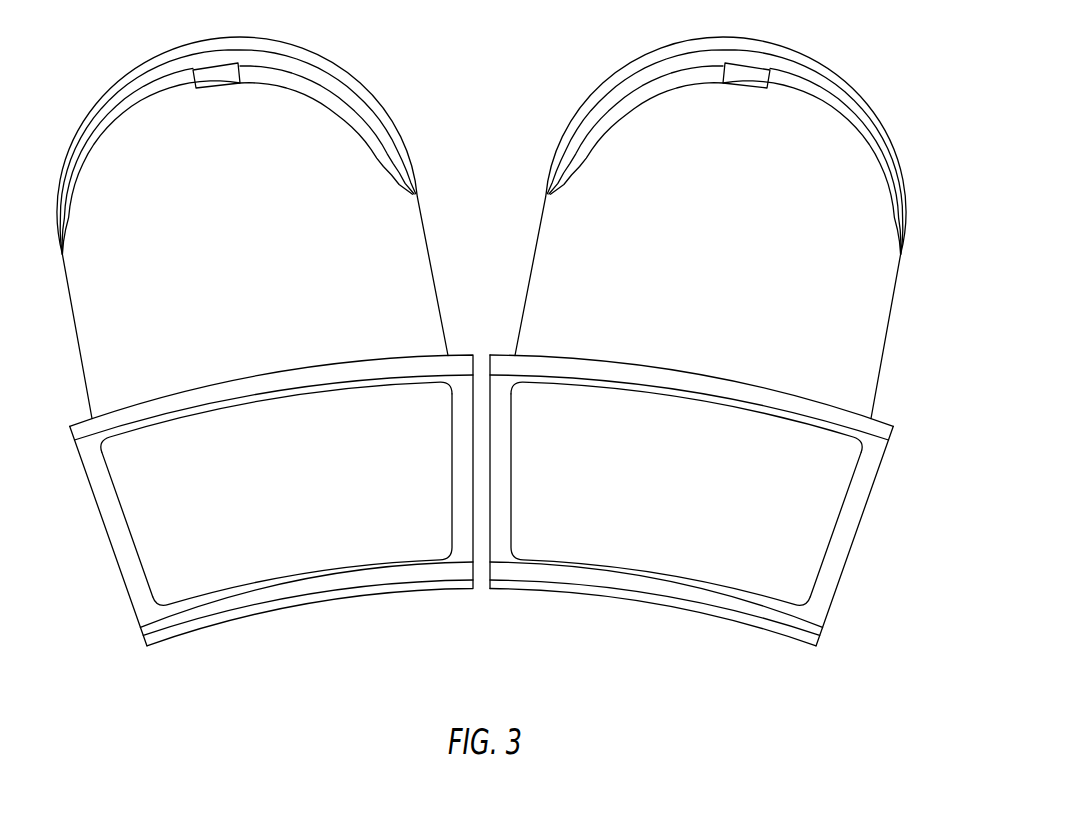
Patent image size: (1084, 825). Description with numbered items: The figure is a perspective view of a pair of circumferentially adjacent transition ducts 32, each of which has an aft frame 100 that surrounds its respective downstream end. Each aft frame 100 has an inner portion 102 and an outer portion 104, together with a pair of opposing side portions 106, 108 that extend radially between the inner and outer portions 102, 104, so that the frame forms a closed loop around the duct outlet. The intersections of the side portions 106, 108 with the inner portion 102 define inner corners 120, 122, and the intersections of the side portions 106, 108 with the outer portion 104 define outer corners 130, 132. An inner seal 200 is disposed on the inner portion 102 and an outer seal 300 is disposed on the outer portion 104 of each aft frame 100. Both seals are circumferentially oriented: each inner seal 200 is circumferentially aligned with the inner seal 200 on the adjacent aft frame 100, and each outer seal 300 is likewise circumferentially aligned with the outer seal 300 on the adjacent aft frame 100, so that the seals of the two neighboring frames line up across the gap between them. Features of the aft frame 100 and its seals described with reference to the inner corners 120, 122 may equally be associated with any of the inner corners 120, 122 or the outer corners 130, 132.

The transition duct 32 is at (910, 121).
The aft frame 100 is at (827, 590).
The inner portion 102 is at (303, 573).
The outer portion 104 is at (737, 410).
The side portion 106 is at (452, 412).
The side portion 108 is at (133, 540).
The inner corner 120 is at (134, 617).
The inner corner 122 is at (825, 620).
The outer corner 130 is at (92, 490).
The outer corner 132 is at (882, 468).
The inner seal 200 is at (457, 590).
The outer seal 300 is at (497, 354).